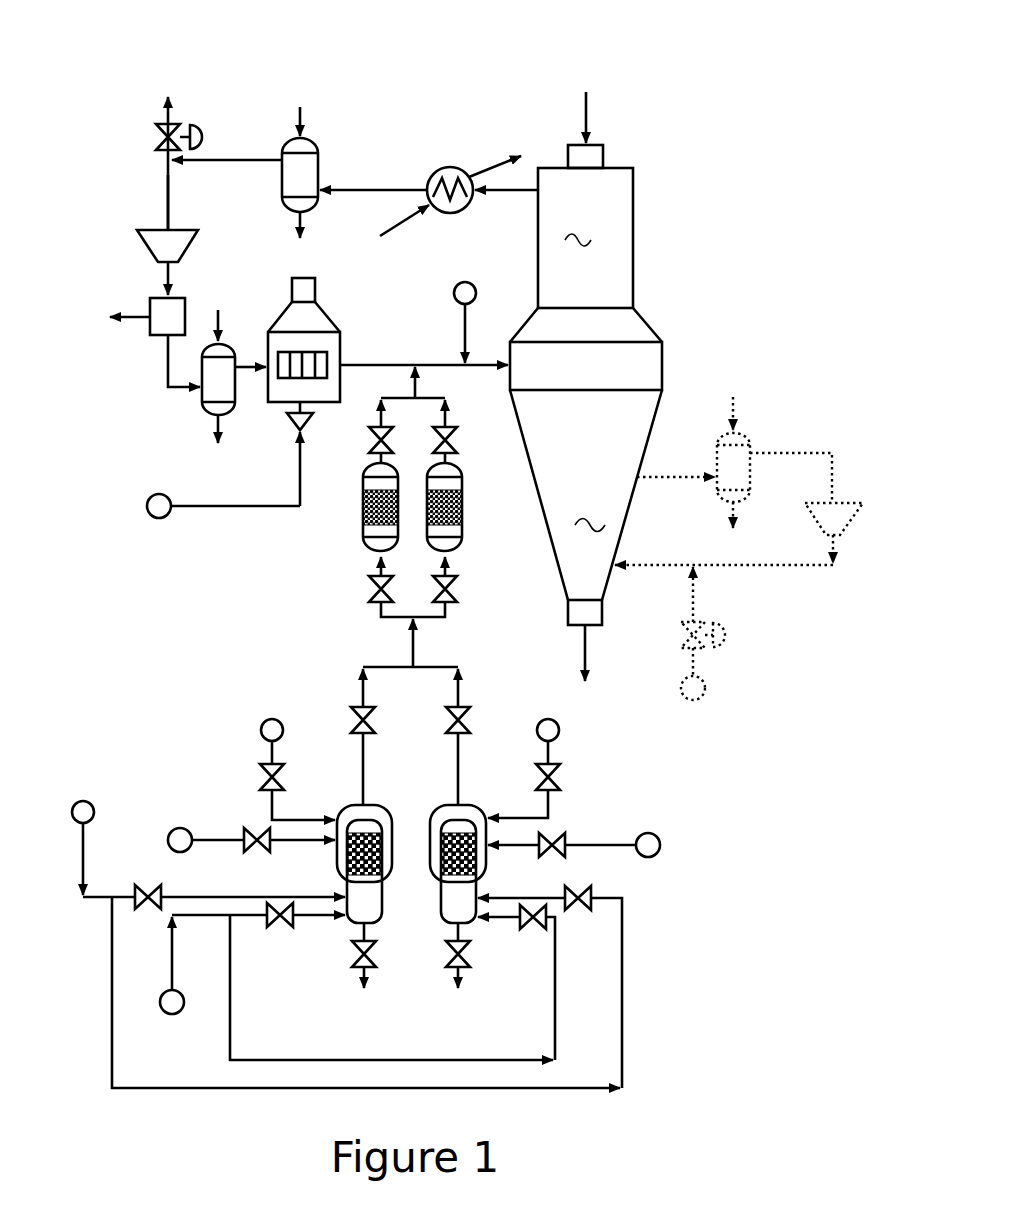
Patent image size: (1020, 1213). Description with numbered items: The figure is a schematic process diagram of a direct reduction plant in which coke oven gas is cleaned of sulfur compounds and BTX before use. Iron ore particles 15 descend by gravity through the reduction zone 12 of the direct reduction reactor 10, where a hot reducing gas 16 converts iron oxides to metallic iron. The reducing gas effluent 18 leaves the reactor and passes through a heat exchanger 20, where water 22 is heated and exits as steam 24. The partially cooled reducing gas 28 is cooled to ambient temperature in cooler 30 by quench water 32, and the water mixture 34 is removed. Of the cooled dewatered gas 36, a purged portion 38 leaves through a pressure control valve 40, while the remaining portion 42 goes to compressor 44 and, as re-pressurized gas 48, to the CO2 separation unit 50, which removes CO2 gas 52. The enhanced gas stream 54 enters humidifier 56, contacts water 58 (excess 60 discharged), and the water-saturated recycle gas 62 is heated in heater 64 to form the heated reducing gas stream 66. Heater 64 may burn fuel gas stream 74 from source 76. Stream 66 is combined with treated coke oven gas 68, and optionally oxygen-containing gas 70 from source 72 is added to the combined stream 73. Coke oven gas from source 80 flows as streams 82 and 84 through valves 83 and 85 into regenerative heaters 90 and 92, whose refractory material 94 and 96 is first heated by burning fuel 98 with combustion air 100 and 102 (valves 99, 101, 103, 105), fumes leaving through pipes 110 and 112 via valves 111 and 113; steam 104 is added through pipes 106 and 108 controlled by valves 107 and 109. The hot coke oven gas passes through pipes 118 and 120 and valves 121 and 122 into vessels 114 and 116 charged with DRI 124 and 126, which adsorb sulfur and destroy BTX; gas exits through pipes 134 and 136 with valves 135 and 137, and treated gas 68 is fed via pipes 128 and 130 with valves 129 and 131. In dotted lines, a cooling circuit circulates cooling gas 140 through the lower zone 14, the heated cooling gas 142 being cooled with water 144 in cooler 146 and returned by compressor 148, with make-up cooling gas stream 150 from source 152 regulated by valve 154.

The direct reduction reactor 10 is at (655, 318).
The reduction zone 12 is at (577, 223).
The lower zone 14 is at (590, 509).
The iron ore particles 15 is at (588, 115).
The reducing gas 16 is at (500, 362).
The reducing gas effluent 18 is at (512, 195).
The heat exchanger 20 is at (450, 168).
The water 22 is at (395, 223).
The steam 24 is at (497, 165).
The partially cooled reducing gas 28 is at (355, 188).
The cooler 30 is at (318, 142).
The quench water 32 is at (297, 107).
The water mixture 34 is at (304, 222).
The cooled dewatered gas 36 is at (215, 165).
The purged portion 38 is at (160, 132).
The pressure control valve 40 is at (193, 128).
The remaining portion 42 is at (160, 212).
The compressor 44 is at (190, 245).
The re-pressurized gas 48 is at (178, 283).
The CO2 separation unit 50 is at (166, 357).
The CO2 gas 52 is at (140, 310).
The enhanced gas stream 54 is at (170, 390).
The humidifier 56 is at (205, 408).
The water 58 is at (222, 318).
The excess water 60 is at (212, 440).
The water-saturated recycle gas 62 is at (250, 370).
The heater 64 is at (318, 302).
The heated reducing gas stream 66 is at (350, 360).
The coke oven gas 68 is at (419, 378).
The oxygen-containing gas 70 is at (462, 350).
The oxygen source 72 is at (462, 282).
The combined stream 73 is at (435, 365).
The fuel gas stream 74 is at (298, 490).
The fuel gas source 76 is at (163, 518).
The coke oven gas source 80 is at (88, 800).
The coke oven gas stream 82 is at (250, 896).
The valve 83 is at (148, 885).
The coke oven gas stream 84 is at (505, 896).
The valve 85 is at (578, 910).
The regenerative heater 90 is at (352, 805).
The regenerative heater 92 is at (445, 805).
The refractory material 94 is at (350, 852).
The refractory material 96 is at (445, 858).
The fuel 98 is at (264, 722).
The valve 99 is at (262, 777).
The combustion air 100 is at (172, 835).
The valve 101 is at (555, 785).
The combustion air 102 is at (660, 853).
The valve 103 is at (240, 830).
The steam 104 is at (165, 1012).
The valve 105 is at (560, 855).
The steam pipe 106 is at (240, 917).
The valve 107 is at (290, 927).
The steam pipe 108 is at (555, 975).
The valve 109 is at (530, 928).
The fume pipe 110 is at (360, 990).
The valve 111 is at (376, 952).
The fume pipe 112 is at (462, 985).
The valve 113 is at (452, 965).
The adsorbent vessel 114 is at (370, 556).
The adsorbent vessel 116 is at (457, 556).
The pipe 118 is at (372, 620).
The pipe 120 is at (452, 620).
The valve 121 is at (370, 590).
The valve 122 is at (458, 590).
The DRI 124 is at (365, 510).
The DRI 126 is at (462, 510).
The pipe 128 is at (372, 412).
The valve 129 is at (365, 452).
The pipe 130 is at (458, 428).
The valve 131 is at (462, 452).
The pipe 134 is at (363, 770).
The valve 135 is at (352, 718).
The pipe 136 is at (458, 770).
The valve 137 is at (470, 718).
The cooling gas 140 is at (655, 565).
The heated cooling gas 142 is at (668, 476).
The water 144 is at (730, 412).
The cooler 146 is at (752, 440).
The compressor 148 is at (812, 508).
The cooling gas stream 150 is at (700, 660).
The cooling gas source 152 is at (703, 700).
The valve 154 is at (703, 625).